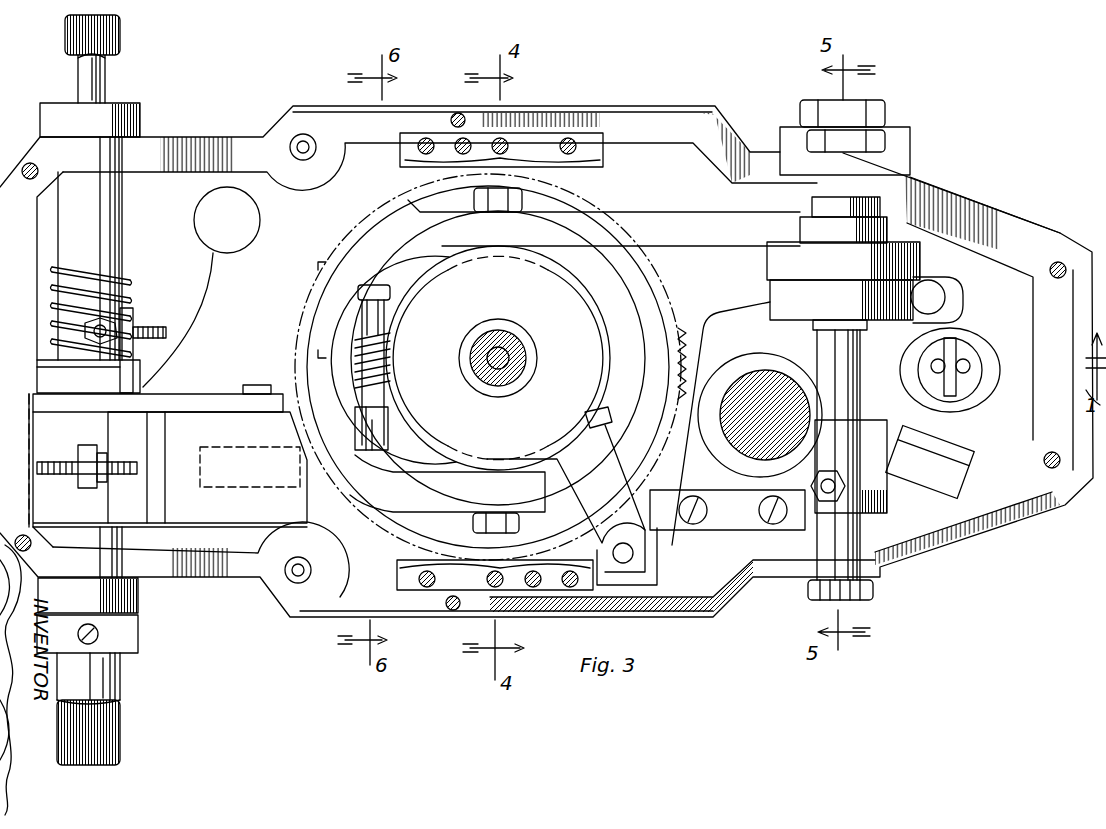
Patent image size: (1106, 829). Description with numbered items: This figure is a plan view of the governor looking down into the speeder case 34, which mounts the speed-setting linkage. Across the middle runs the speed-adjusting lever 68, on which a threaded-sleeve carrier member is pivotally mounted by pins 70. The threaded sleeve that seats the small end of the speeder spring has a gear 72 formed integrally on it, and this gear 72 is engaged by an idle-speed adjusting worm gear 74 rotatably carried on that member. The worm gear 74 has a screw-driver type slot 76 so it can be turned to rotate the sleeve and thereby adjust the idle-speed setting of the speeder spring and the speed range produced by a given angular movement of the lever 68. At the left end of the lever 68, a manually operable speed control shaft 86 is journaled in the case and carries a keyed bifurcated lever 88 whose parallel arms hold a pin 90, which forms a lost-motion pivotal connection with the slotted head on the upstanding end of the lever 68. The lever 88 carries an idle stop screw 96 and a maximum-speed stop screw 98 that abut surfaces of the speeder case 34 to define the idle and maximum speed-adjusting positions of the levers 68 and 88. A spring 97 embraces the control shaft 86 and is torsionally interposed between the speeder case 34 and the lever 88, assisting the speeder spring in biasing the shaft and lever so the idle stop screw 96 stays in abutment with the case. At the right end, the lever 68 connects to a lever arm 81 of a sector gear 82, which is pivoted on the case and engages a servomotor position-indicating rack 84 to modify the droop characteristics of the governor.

The speeder case 34 is at (585, 106).
The speed-adjusting lever 68 is at (395, 237).
The pins 70 is at (495, 208).
The gear 72 is at (605, 415).
The idle-speed adjusting worm gear 74 is at (360, 335).
The screw-driver type slot 76 is at (375, 450).
The lever arm 81 is at (897, 272).
The sector gear 82 is at (787, 308).
The servomotor position-indicating rack 84 is at (945, 300).
The manually operable speed control shaft 86 is at (115, 64).
The bifurcated lever 88 is at (282, 398).
The pin 90 is at (250, 385).
The idle stop screw 96 is at (50, 475).
The spring 97 is at (118, 262).
The stop screw 98 is at (166, 332).